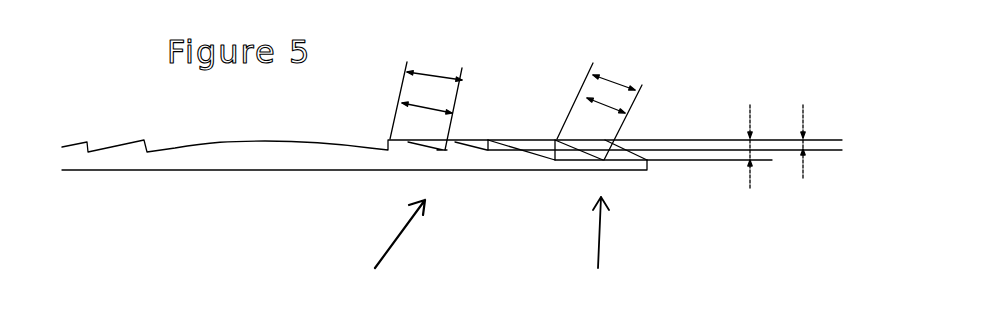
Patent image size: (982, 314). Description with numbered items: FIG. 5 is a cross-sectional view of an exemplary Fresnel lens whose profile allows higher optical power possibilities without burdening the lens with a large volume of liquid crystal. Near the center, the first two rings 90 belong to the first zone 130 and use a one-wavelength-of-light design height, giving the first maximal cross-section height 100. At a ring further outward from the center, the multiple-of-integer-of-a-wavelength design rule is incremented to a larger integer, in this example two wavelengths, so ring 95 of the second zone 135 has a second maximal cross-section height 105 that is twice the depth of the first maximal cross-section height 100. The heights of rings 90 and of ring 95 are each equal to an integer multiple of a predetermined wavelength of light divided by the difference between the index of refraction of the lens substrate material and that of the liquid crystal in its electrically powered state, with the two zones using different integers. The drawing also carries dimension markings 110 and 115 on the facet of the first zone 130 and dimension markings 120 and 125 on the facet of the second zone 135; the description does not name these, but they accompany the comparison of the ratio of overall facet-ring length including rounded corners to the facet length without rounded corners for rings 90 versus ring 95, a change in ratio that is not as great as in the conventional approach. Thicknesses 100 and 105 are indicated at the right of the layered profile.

The first two rings 90 is at (468, 148).
The ring 95 is at (521, 153).
The first maximal cross-section height 100 is at (804, 135).
The second maximal cross-section height 105 is at (753, 139).
The first tab width 110 is at (433, 70).
The first tab base width 115 is at (422, 110).
The second tab width 120 is at (612, 78).
The second tab base width 125 is at (598, 103).
The first zone 130 is at (389, 250).
The second zone 135 is at (601, 248).